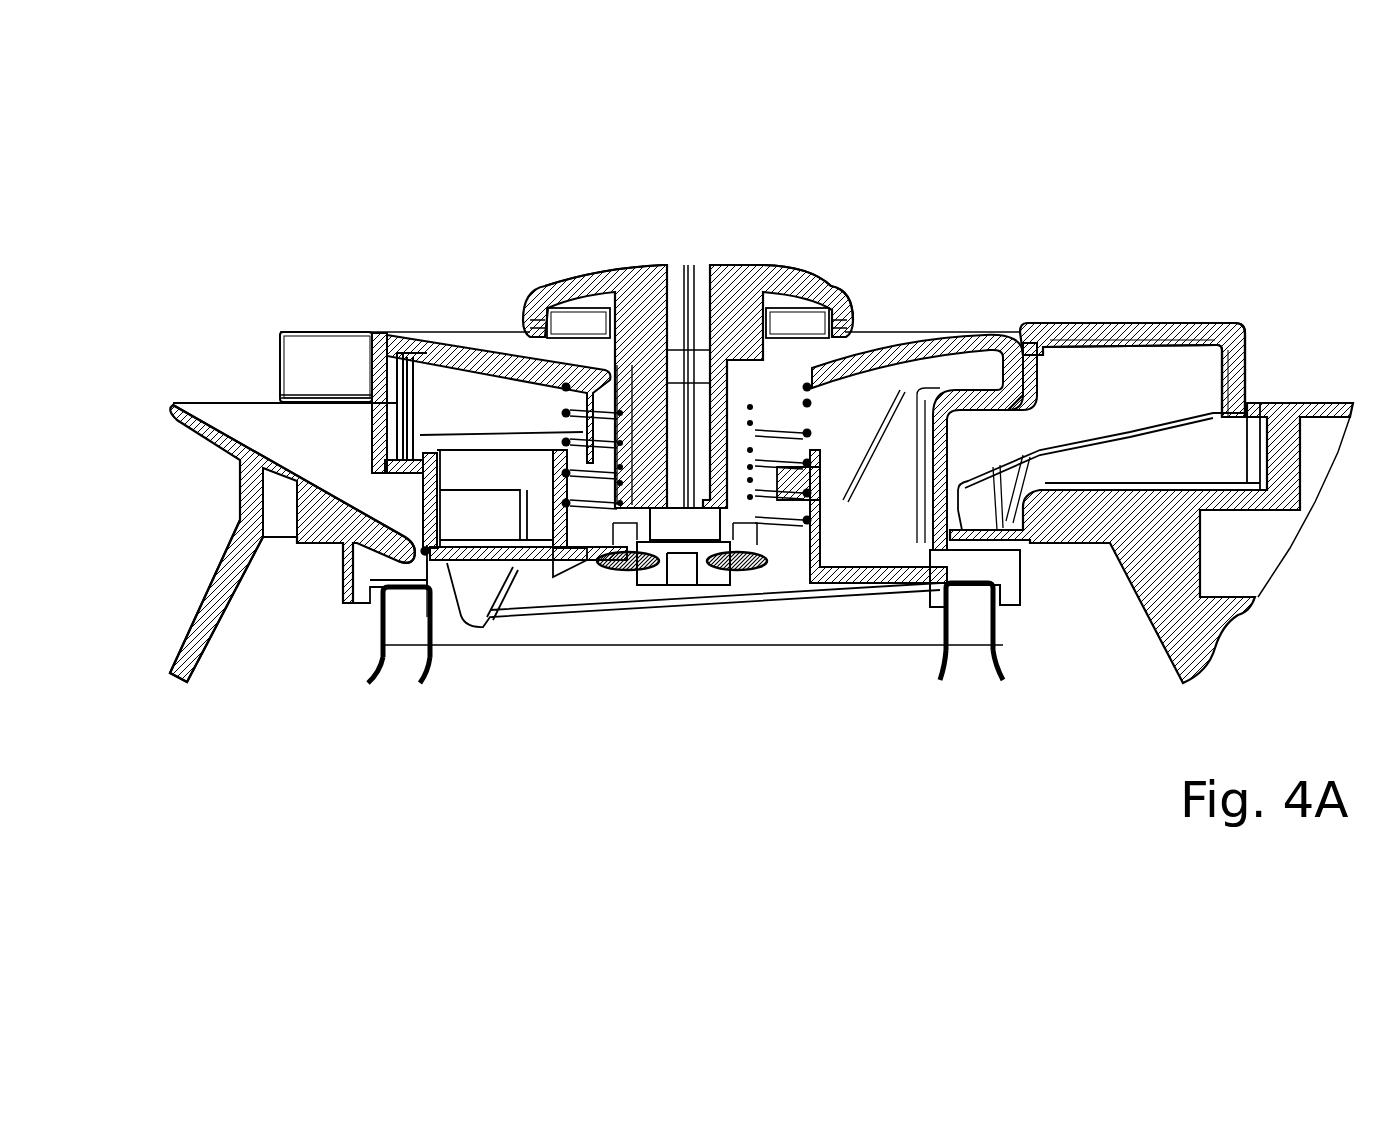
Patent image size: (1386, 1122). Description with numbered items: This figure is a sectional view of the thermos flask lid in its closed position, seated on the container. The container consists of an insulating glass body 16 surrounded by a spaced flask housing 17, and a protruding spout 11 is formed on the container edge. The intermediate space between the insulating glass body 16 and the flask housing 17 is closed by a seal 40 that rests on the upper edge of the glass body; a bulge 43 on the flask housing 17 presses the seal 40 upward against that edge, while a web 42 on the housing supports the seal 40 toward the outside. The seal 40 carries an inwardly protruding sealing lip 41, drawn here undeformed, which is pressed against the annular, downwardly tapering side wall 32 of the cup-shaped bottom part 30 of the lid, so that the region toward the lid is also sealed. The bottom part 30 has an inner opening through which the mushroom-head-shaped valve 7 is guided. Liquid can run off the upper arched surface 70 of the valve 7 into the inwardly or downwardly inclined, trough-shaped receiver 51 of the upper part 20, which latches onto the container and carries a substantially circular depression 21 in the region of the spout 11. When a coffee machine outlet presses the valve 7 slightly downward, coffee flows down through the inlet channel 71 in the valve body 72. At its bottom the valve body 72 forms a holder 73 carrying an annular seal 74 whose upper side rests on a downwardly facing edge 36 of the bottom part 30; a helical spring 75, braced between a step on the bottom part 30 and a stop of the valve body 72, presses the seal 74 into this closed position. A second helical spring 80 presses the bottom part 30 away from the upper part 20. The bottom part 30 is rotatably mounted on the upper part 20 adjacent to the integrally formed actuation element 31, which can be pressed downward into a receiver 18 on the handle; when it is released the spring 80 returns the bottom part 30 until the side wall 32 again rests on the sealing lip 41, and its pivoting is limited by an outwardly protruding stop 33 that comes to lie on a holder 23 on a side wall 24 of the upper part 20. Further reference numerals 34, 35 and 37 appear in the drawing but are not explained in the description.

The valve 7 is at (723, 300).
The spout 11 is at (225, 420).
The insulating glass body 16 is at (403, 637).
The flask housing 17 is at (190, 652).
The receiver 18 is at (1227, 470).
The upper part 20 is at (975, 333).
The depression 21 is at (317, 363).
The holder 23 is at (325, 435).
The side wall 24 is at (387, 353).
The bottom part 30 is at (935, 500).
The actuation element 31 is at (1163, 343).
The side wall 32 is at (228, 423).
The stop 33 is at (423, 437).
The inner guide 34 is at (547, 470).
The valve plate 35 is at (622, 560).
The edge 36 is at (760, 548).
The seal ring 37 is at (750, 557).
The seal 40 is at (383, 563).
The sealing lip 41 is at (430, 565).
The web 42 is at (343, 578).
The bulge 43 is at (403, 553).
The receiver 51 is at (905, 365).
The arched surface 70 is at (793, 282).
The inlet channel 71 is at (700, 287).
The valve body 72 is at (713, 450).
The holder 73 is at (655, 577).
The annular seal 74 is at (620, 570).
The spring 75 is at (780, 373).
The second spring 80 is at (810, 450).